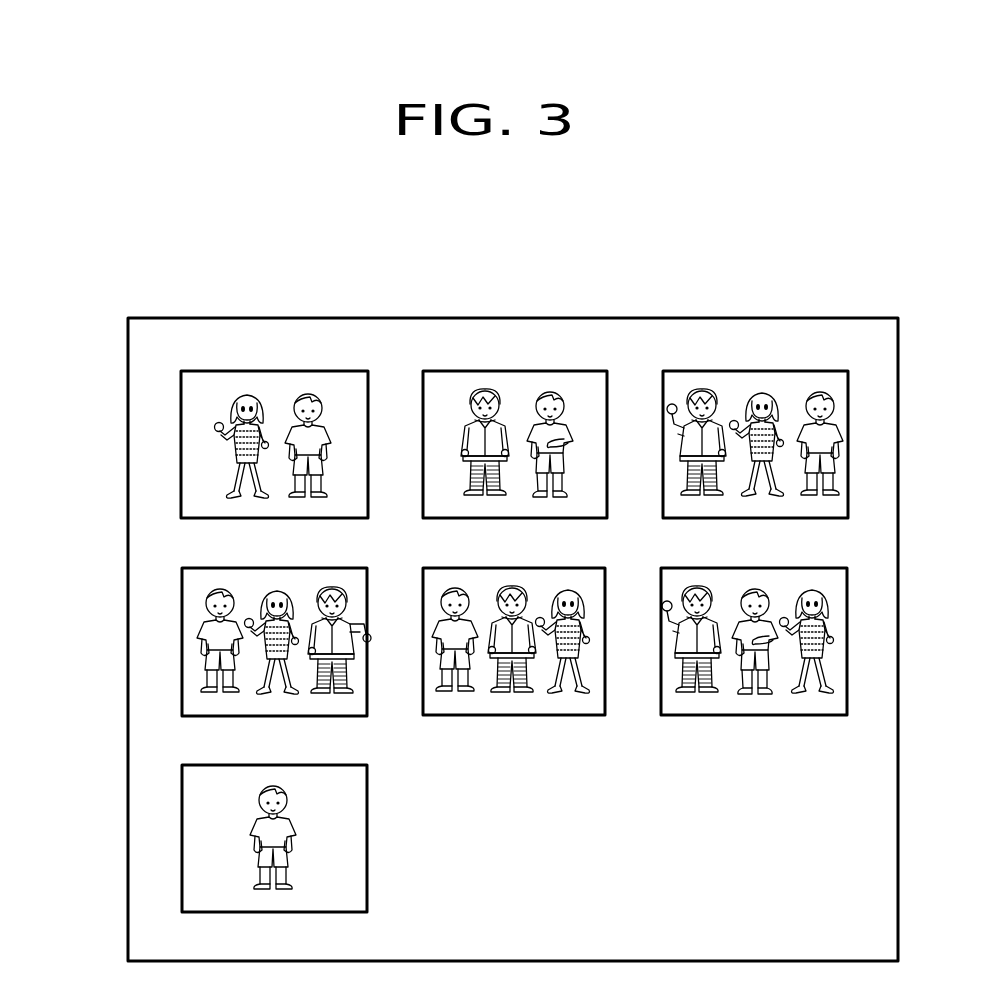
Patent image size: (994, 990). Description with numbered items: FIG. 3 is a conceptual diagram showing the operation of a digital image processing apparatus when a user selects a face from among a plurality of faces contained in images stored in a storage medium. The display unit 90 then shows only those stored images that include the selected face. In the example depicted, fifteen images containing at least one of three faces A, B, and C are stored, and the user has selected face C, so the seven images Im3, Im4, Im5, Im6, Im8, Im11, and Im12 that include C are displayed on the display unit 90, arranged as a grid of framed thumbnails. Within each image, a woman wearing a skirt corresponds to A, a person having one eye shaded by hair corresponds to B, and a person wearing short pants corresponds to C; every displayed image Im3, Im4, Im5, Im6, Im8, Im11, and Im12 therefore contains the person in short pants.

The display unit 90 is at (636, 317).
The image Im3 is at (276, 370).
The image Im4 is at (516, 370).
The image Im5 is at (756, 370).
The image Im6 is at (182, 641).
The image Im8 is at (513, 718).
The image Im11 is at (750, 718).
The image Im12 is at (182, 838).